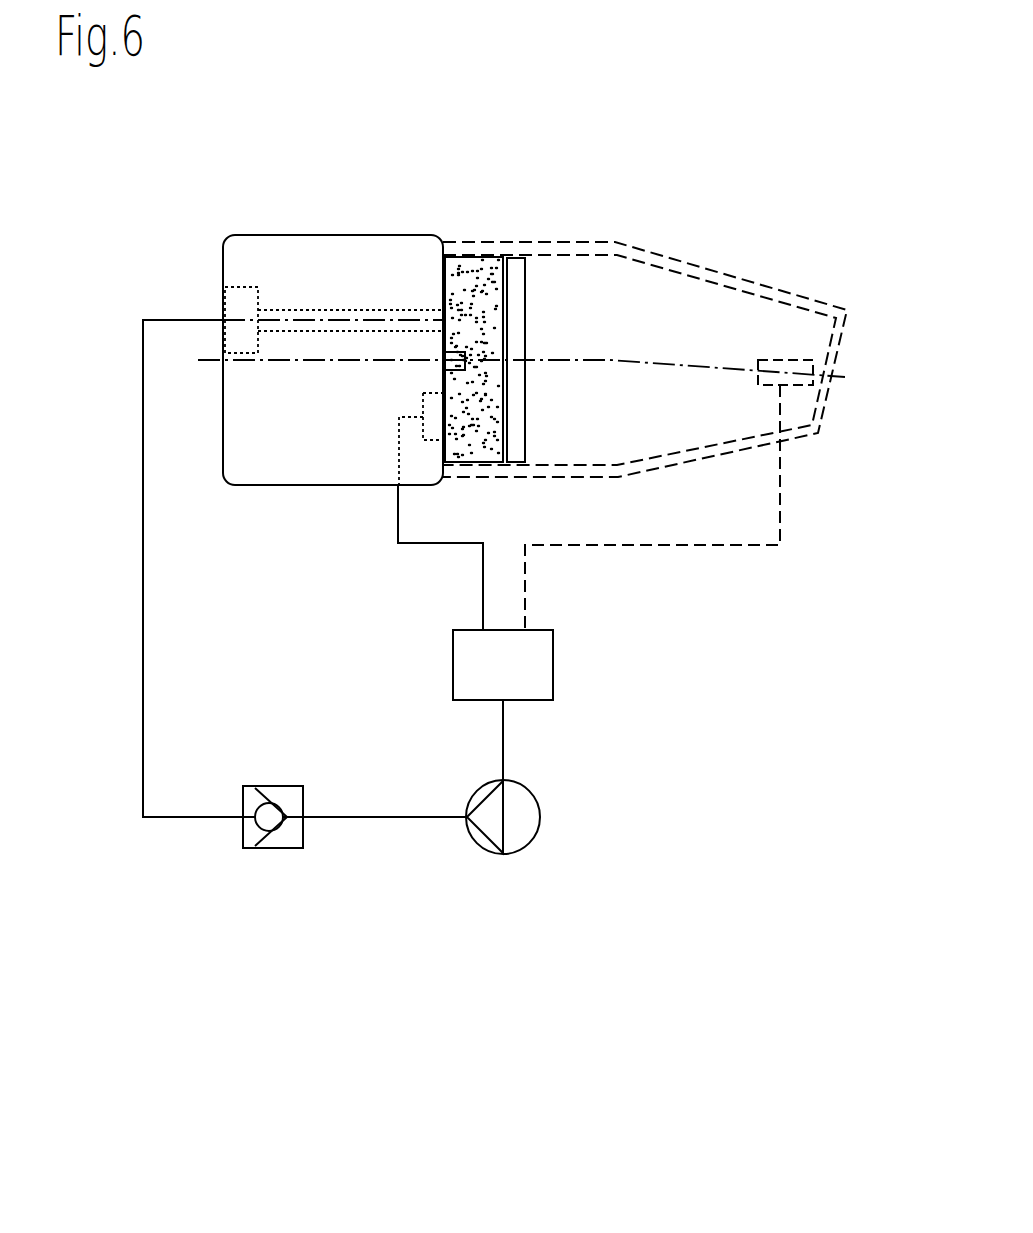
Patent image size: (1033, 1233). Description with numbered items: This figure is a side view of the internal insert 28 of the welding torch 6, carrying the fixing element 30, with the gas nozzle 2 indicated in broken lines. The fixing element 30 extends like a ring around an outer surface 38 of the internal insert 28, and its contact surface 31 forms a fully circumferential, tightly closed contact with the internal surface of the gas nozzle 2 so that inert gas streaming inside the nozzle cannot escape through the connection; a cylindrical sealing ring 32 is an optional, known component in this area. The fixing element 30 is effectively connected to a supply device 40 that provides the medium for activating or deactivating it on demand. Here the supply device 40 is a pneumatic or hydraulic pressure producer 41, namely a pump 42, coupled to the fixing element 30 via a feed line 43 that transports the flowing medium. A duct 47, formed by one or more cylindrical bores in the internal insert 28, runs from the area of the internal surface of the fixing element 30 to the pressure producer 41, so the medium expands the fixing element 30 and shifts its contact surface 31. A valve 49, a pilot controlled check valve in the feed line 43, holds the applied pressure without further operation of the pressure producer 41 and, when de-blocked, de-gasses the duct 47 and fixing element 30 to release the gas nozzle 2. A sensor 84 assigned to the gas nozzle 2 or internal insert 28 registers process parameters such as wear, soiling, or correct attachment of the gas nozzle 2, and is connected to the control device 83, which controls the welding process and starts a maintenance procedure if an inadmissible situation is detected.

The gas nozzle 2 is at (660, 248).
The welding torch 6 is at (585, 193).
The internal insert 28 is at (332, 207).
The fixing element 30 is at (477, 260).
The contact surface 31 is at (482, 440).
The cylindrical sealing ring 32 is at (507, 310).
The outer surface 38 is at (513, 399).
The supply device 40 is at (195, 912).
The pressure producer 41 is at (457, 860).
The pump 42 is at (518, 837).
The feed line 43 is at (142, 417).
The duct 47 is at (295, 313).
The valve 49 is at (260, 880).
The control device 83 is at (533, 668).
The sensor 84 is at (787, 348).